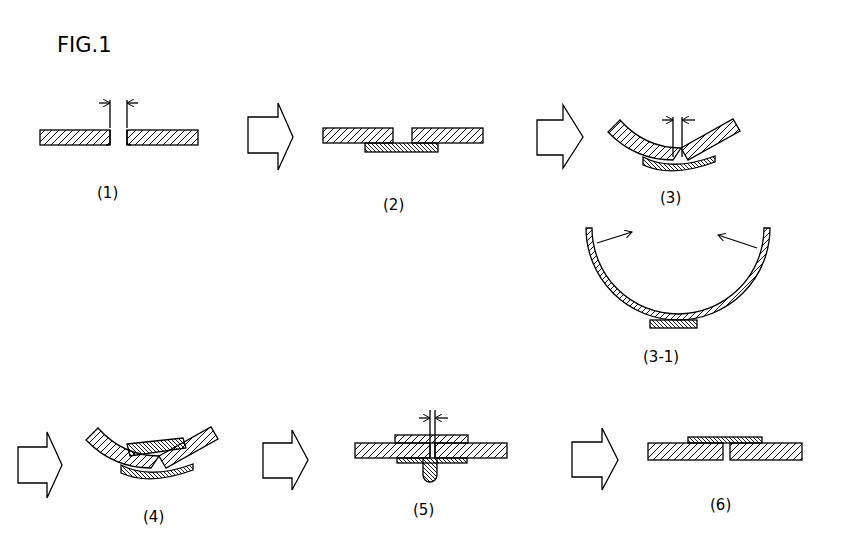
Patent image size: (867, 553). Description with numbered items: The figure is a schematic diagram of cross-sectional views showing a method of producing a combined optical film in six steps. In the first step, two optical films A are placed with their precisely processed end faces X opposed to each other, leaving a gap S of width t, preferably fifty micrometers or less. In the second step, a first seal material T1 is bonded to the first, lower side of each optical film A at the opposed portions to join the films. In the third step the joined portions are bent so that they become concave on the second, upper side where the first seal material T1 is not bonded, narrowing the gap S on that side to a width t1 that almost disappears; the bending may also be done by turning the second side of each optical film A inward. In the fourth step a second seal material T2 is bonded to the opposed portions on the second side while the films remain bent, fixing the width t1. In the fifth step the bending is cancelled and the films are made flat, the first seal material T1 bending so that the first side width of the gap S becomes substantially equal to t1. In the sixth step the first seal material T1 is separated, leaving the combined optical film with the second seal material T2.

The optical film A is at (421, 286).
The end face X is at (108, 149).
The gap S is at (121, 162).
The width of the gap t is at (118, 104).
The width of the gap on the second side t1 is at (559, 280).
The first seal material T1 is at (431, 329).
The second seal material T2 is at (444, 430).